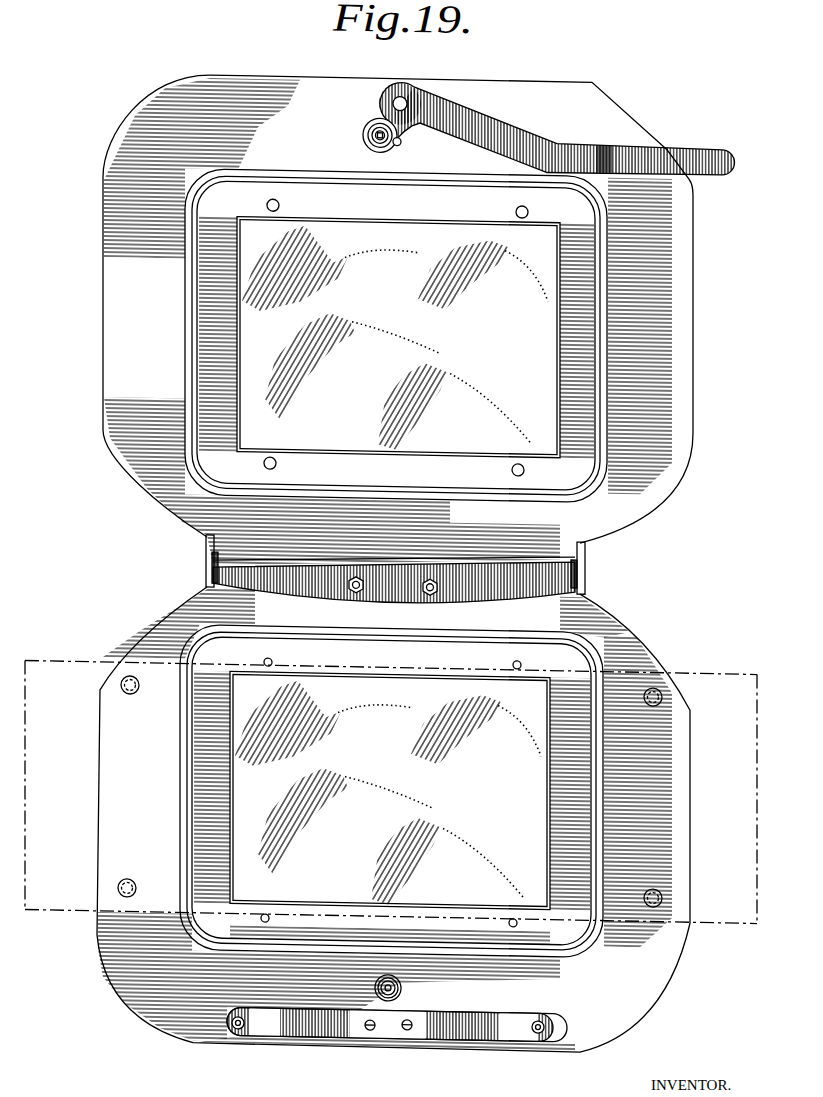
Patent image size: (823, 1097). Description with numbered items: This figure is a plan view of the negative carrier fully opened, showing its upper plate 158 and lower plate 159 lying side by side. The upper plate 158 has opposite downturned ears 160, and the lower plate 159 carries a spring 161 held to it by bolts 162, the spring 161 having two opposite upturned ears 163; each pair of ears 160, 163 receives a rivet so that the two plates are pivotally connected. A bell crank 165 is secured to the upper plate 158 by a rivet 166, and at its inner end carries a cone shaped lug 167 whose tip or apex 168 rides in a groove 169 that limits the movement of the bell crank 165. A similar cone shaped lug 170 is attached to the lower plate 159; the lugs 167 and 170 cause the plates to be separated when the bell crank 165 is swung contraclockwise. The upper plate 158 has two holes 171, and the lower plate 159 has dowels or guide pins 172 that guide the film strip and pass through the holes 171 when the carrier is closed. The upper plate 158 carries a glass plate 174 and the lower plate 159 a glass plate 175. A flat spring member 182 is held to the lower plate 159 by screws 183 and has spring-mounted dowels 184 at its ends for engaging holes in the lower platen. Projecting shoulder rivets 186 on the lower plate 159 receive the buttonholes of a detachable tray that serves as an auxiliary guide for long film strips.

The upper plate 158 is at (683, 215).
The lower plate 159 is at (677, 764).
The downturned ears 160 is at (206, 539).
The spring 161 is at (498, 570).
The bolts 162 is at (350, 584).
The upturned ears 163 is at (211, 571).
The bell crank 165 is at (681, 152).
The rivet 166 is at (408, 92).
The cone shaped lug 167 is at (378, 118).
The tip or apex 168 is at (365, 134).
The groove 169 is at (402, 137).
The cone shaped lug 170 is at (401, 980).
The holes 171 is at (280, 200).
The dowels or guide pins 172 is at (272, 655).
The glass plate 174 is at (402, 217).
The glass plate 175 is at (402, 682).
The flat spring member 182 is at (480, 1009).
The screws 183 is at (367, 1025).
The dowels 184 is at (237, 1027).
The projecting shoulder rivets 186 is at (132, 691).